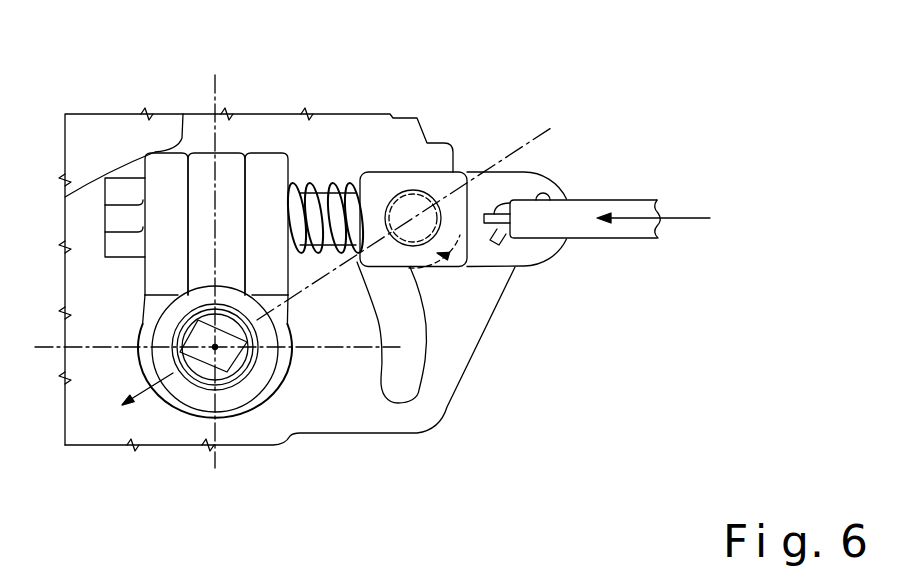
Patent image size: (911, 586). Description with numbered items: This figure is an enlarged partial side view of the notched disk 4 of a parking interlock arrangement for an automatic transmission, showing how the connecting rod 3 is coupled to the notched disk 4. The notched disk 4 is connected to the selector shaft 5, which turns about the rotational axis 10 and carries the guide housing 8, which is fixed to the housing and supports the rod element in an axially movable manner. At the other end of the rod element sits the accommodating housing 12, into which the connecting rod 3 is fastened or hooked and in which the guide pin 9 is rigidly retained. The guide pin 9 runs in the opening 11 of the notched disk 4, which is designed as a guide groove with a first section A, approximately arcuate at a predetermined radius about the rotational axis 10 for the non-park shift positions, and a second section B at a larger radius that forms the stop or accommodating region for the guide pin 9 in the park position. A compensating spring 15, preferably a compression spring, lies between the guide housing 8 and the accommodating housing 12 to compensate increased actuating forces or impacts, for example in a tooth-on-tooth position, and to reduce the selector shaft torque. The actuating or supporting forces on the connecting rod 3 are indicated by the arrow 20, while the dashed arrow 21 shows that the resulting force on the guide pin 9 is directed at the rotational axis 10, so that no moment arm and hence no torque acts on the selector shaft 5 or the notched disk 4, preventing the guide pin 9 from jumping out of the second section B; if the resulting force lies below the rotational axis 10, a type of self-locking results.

The connecting rod 3 is at (650, 234).
The notched disk 4 is at (388, 147).
The selector shaft 5 is at (203, 367).
The guide housing 8 is at (258, 183).
The guide pin 9 is at (441, 217).
The rotational axis 10 is at (235, 375).
The opening 11 is at (417, 323).
The accommodating housing 12 is at (423, 181).
The compensating spring 15 is at (320, 180).
The arrow 20 is at (683, 218).
The arrow having a dashed line 21 is at (301, 290).
The first section A is at (405, 392).
The second section B is at (445, 256).